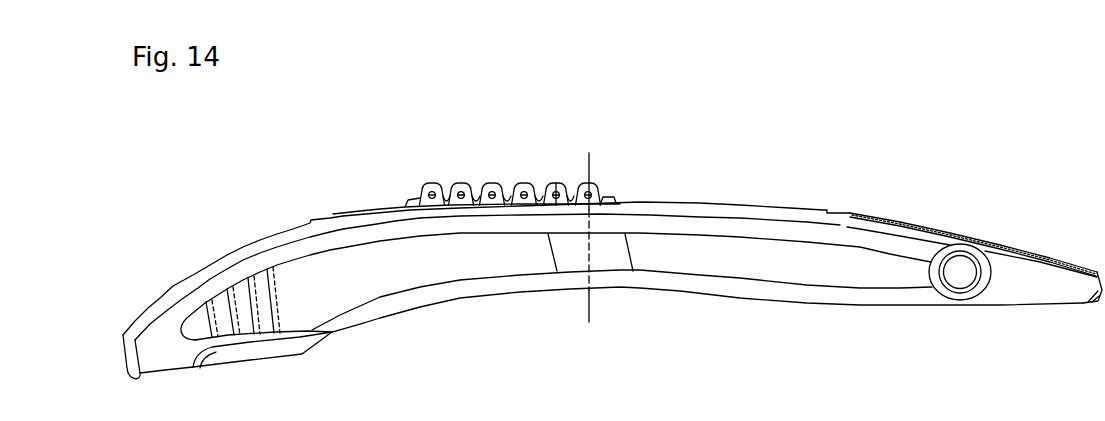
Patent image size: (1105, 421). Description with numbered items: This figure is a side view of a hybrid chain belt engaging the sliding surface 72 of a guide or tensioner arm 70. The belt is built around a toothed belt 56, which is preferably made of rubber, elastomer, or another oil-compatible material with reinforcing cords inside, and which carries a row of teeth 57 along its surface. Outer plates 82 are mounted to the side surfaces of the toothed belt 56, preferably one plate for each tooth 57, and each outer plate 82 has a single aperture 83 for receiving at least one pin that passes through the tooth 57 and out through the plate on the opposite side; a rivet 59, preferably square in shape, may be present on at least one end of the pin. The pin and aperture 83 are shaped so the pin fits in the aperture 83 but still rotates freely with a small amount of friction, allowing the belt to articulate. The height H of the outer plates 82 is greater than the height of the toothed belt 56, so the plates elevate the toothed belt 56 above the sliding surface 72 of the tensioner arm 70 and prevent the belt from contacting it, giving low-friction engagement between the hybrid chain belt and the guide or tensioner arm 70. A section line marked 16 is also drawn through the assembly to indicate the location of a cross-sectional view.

The tensioner arm or guide 70 is at (281, 232).
The sliding surface 72 is at (392, 208).
The outer plate 82 is at (421, 194).
The tooth 57 is at (459, 184).
The rivet 59 is at (494, 189).
The aperture 83 is at (526, 189).
The height of the plates H is at (556, 186).
The toothed belt 56 is at (610, 196).
The section line 16- 16 is at (590, 163).